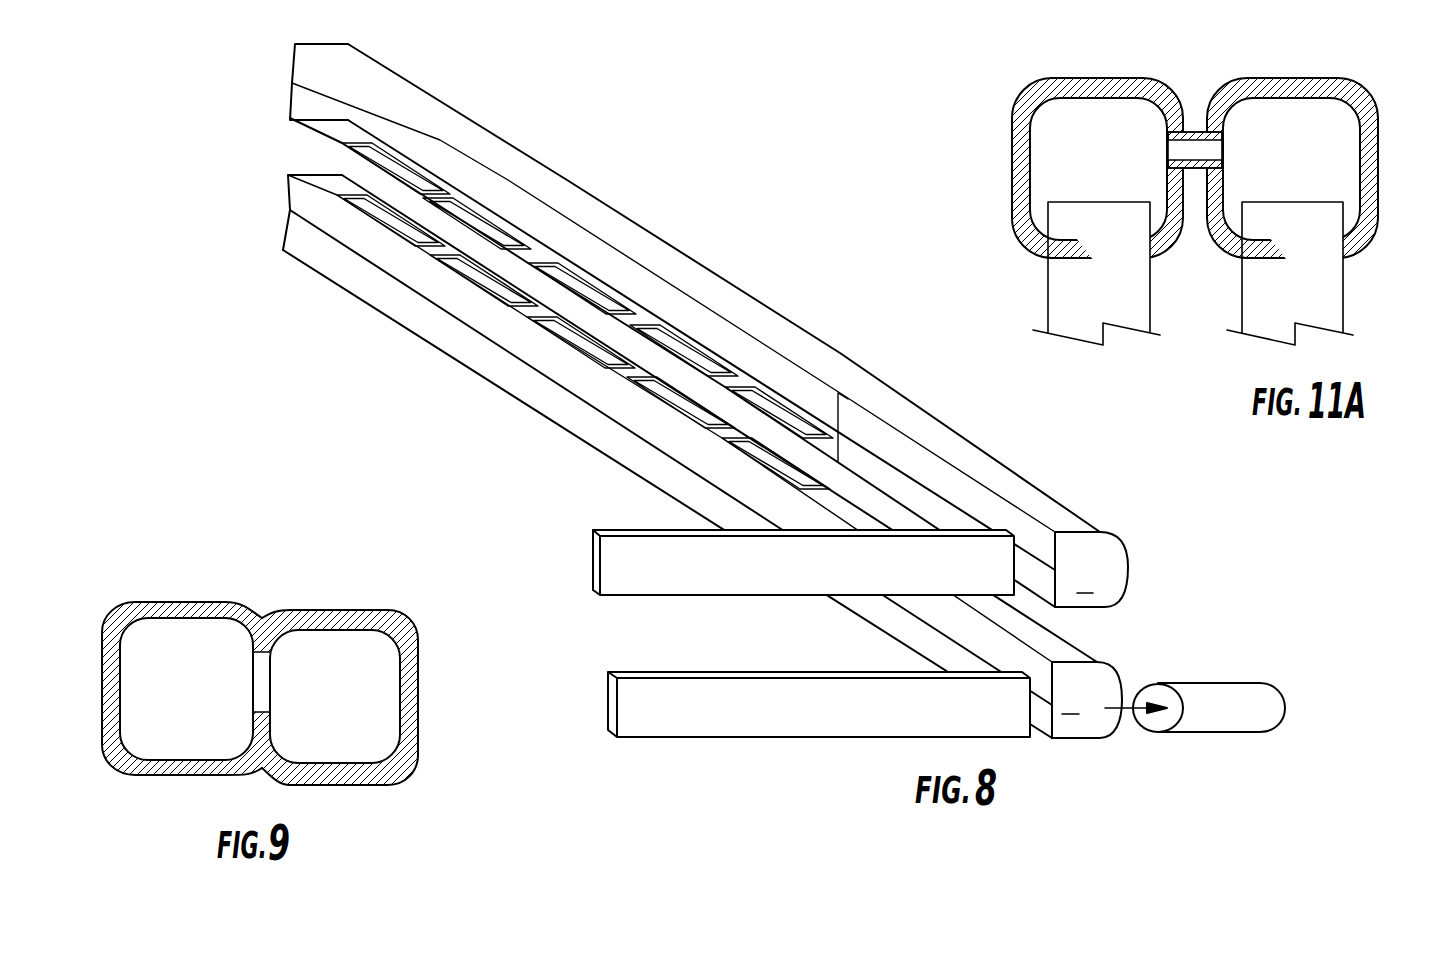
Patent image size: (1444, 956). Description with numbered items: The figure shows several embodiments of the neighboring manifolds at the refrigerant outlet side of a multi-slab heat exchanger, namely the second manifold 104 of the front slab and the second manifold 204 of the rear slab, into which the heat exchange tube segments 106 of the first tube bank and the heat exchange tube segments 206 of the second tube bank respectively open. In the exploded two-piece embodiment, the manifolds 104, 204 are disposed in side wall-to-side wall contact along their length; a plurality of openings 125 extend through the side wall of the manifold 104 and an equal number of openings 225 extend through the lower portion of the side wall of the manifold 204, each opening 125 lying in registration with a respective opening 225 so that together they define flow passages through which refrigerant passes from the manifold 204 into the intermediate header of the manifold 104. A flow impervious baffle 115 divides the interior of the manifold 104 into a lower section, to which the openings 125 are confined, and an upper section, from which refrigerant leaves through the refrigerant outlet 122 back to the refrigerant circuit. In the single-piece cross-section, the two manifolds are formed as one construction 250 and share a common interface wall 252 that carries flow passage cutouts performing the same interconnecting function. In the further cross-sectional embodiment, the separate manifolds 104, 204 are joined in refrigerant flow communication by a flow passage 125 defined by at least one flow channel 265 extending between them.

In FIG. 8, the second manifold of the first heat exchanger slab 104 is at (1108, 670).
In FIG. 9, the second manifold of the first heat exchanger slab 104 is at (130, 603).
In FIG. 11A, the second manifold of the first heat exchanger slab 104 is at (1028, 97).
In FIG. 8, the heat exchange tube segments 106 is at (712, 670).
In FIG. 11A, the heat exchange tube segments 106 is at (1048, 272).
In FIG. 8, the flow impervious baffle 115 is at (845, 455).
In FIG. 8, the refrigerant outlet 122 is at (1245, 683).
In FIG. 8, the openings 125 is at (403, 230).
In FIG. 9, the openings 125 is at (254, 684).
In FIG. 11A, the openings 125 is at (1168, 150).
In FIG. 8, the second manifold of the second heat exchanger slab 204 is at (1095, 528).
In FIG. 9, the second manifold of the second heat exchanger slab 204 is at (415, 625).
In FIG. 11A, the second manifold of the second heat exchanger slab 204 is at (1372, 95).
In FIG. 8, the heat exchange tube segments 206 is at (595, 530).
In FIG. 11A, the heat exchange tube segments 206 is at (1343, 268).
In FIG. 8, the openings 225 is at (352, 144).
In FIG. 9, the openings 225 is at (270, 680).
In FIG. 9, the single piece construction 250 is at (243, 598).
In FIG. 9, the common interface wall 252 is at (268, 727).
In FIG. 11A, the flow channel 265 is at (1190, 170).